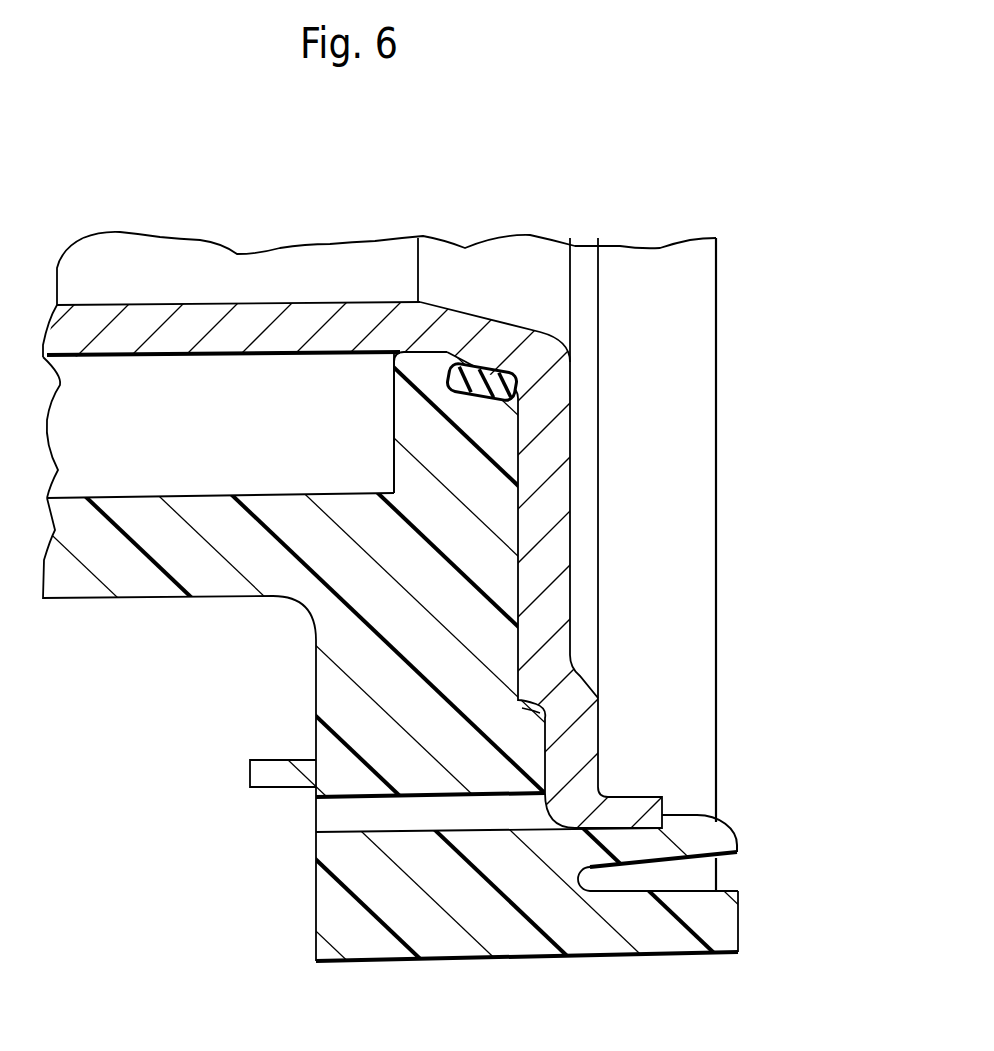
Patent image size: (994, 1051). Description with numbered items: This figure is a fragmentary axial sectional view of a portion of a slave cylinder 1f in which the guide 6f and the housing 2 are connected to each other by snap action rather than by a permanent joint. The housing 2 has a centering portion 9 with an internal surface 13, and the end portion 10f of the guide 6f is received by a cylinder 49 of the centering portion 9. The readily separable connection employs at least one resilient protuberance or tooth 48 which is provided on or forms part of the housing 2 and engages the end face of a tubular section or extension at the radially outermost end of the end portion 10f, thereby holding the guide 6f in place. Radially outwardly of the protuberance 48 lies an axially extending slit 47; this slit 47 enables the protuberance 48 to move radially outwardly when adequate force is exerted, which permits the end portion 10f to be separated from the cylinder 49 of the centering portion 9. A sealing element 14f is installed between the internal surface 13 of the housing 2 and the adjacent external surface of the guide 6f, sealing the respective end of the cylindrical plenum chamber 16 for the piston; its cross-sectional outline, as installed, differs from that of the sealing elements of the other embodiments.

The slave cylinder 1f is at (732, 296).
The housing 2 is at (317, 678).
The guide 6f is at (262, 302).
The centering portion 9 is at (503, 640).
The end portion 10f is at (565, 492).
The internal surface 13 is at (432, 345).
The sealing element 14f is at (488, 367).
The plenum chamber 16 is at (235, 440).
The slit 47 is at (727, 868).
The protuberance 48 is at (738, 838).
The cylinder 49 is at (637, 793).